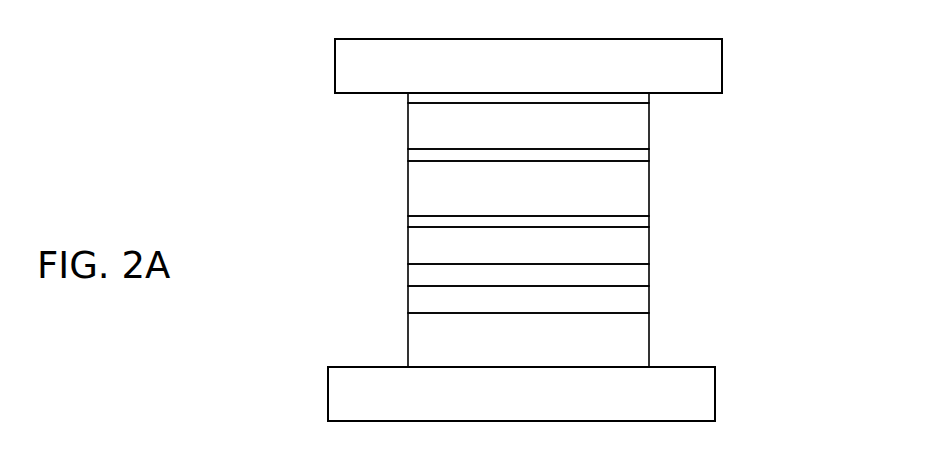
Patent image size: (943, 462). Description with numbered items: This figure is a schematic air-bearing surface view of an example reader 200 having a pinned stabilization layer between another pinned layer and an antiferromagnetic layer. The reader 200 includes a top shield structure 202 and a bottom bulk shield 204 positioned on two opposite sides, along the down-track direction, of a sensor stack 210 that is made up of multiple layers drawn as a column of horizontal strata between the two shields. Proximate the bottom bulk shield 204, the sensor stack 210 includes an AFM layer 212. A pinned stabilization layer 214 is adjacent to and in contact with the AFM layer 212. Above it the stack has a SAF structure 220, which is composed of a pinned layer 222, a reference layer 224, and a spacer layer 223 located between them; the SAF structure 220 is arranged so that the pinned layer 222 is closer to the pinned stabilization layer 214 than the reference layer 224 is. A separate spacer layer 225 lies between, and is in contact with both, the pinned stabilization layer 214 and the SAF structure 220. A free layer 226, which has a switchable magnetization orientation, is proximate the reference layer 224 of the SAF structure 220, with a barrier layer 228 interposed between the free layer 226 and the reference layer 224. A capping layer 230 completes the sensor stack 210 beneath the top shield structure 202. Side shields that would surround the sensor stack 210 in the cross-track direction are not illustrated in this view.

The reader 200 is at (152, 69).
The top shield structure 202 is at (722, 63).
The bottom bulk shield 204 is at (715, 394).
The sensor stack 210 is at (473, 185).
The AFM layer 212 is at (649, 341).
The pinned stabilization layer 214 is at (649, 300).
The SAF structure 220 is at (564, 212).
The pinned layer 222 is at (649, 256).
The spacer layer 223 is at (649, 222).
The reference layer 224 is at (649, 188).
The spacer layer 225 is at (408, 278).
The free layer 226 is at (408, 128).
The barrier layer 228 is at (649, 154).
The capping layer 230 is at (602, 93).